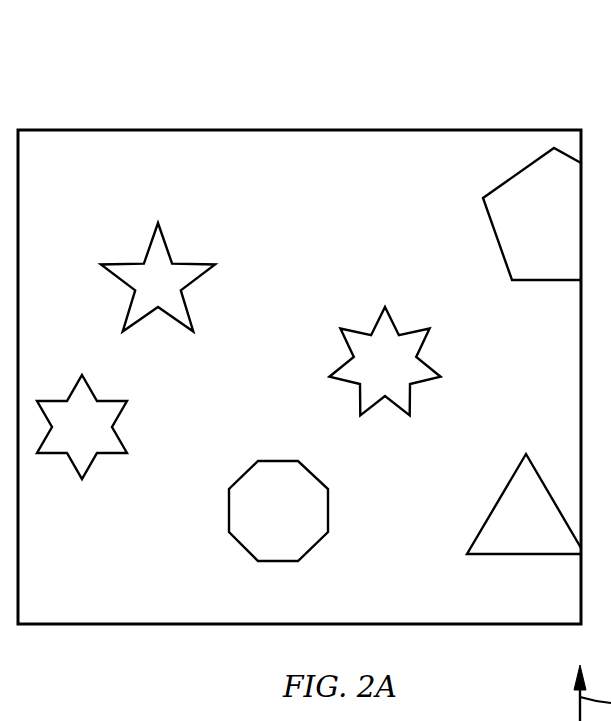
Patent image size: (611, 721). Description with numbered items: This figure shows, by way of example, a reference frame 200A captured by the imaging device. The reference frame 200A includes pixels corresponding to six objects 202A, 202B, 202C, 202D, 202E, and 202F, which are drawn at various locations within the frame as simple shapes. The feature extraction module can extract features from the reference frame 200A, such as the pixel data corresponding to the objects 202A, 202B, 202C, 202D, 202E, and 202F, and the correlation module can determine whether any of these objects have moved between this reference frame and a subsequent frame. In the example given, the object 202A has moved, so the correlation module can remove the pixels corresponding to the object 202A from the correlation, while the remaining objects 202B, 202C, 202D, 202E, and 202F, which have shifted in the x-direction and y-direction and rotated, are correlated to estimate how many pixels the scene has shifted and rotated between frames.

The reference frame 200A is at (127, 88).
The object 202A is at (80, 398).
The object 202B is at (150, 268).
The object 202C is at (238, 533).
The object 202D is at (382, 343).
The object 202E is at (508, 512).
The object 202F is at (527, 202).